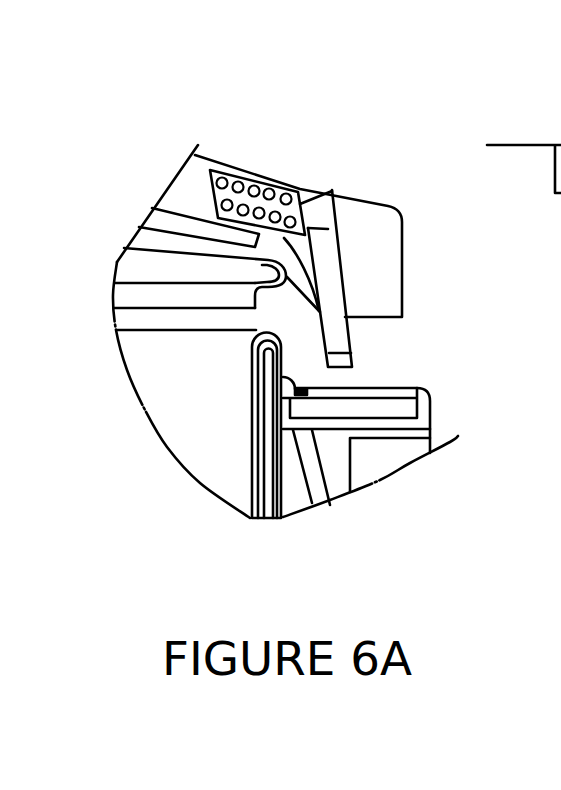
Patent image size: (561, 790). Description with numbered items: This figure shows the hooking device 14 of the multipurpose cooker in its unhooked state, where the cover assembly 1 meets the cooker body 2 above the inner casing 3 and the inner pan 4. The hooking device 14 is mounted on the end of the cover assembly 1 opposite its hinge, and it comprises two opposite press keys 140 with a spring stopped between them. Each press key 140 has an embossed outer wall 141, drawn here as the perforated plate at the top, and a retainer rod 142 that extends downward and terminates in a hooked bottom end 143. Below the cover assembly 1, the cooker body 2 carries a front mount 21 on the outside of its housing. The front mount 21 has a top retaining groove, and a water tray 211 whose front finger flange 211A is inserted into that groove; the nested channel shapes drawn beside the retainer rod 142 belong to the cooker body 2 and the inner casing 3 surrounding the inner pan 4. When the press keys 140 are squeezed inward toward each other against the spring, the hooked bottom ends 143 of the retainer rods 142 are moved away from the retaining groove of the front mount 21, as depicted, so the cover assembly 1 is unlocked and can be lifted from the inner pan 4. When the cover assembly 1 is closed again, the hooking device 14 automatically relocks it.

The cover assembly 1 is at (392, 240).
The hooking device 14 is at (222, 168).
The embossed outer wall 141 is at (268, 196).
The press keys 140 is at (335, 196).
The retainer rod 142 is at (341, 331).
The hooked bottom end 143 is at (341, 358).
The cooker body 2 is at (280, 520).
The inner casing 3 is at (251, 522).
The inner pan 4 is at (200, 467).
The front mount 21 is at (348, 505).
The water tray 211 is at (388, 411).
The front finger flange 211A is at (433, 408).